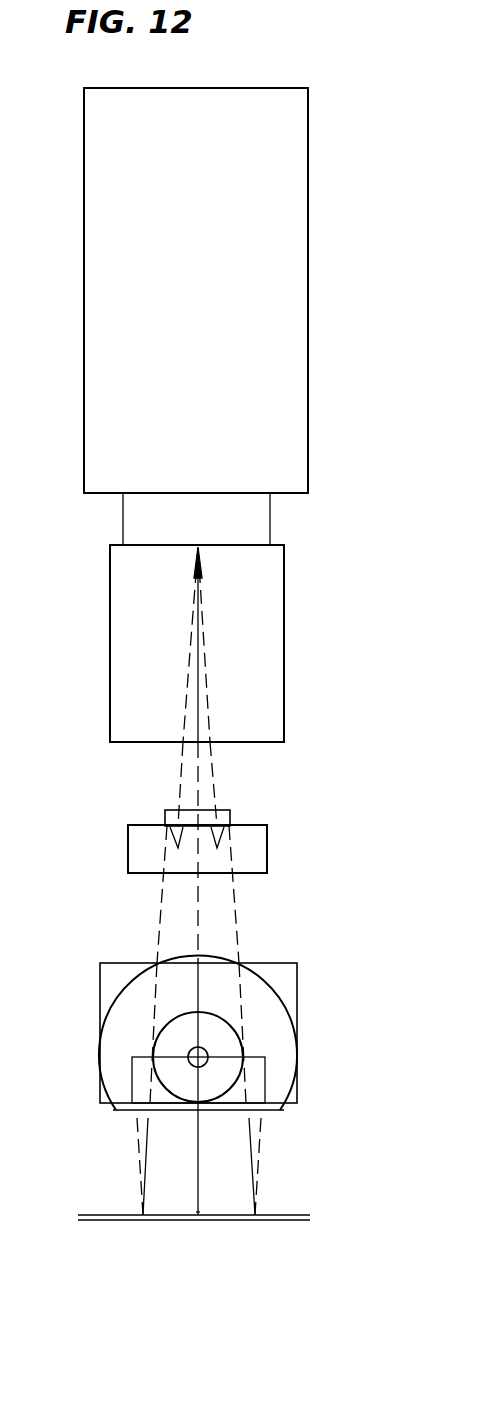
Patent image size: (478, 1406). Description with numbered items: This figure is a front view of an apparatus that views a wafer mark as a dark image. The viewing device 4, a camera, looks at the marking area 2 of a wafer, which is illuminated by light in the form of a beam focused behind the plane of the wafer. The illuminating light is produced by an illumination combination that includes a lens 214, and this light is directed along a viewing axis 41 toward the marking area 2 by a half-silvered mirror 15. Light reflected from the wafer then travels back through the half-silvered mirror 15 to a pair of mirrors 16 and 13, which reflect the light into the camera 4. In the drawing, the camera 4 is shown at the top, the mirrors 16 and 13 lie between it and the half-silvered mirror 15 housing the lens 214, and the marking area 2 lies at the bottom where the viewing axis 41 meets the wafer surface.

The viewing device 4 is at (296, 312).
The mirror 13 is at (135, 858).
The mirror 16 is at (166, 812).
The half-silvered mirror 15 is at (100, 982).
The lens 214 is at (107, 1058).
The marking area 2 is at (188, 1220).
The viewing axis 41 is at (198, 1198).